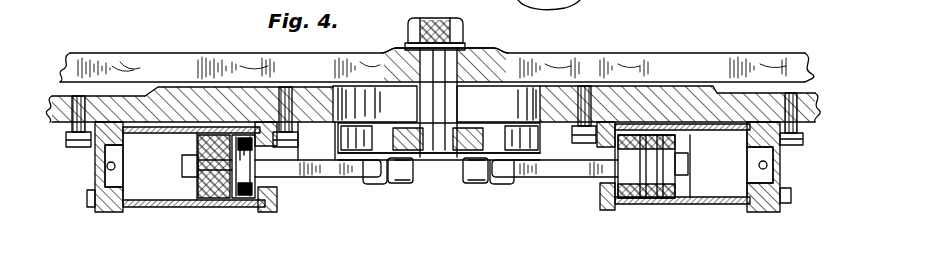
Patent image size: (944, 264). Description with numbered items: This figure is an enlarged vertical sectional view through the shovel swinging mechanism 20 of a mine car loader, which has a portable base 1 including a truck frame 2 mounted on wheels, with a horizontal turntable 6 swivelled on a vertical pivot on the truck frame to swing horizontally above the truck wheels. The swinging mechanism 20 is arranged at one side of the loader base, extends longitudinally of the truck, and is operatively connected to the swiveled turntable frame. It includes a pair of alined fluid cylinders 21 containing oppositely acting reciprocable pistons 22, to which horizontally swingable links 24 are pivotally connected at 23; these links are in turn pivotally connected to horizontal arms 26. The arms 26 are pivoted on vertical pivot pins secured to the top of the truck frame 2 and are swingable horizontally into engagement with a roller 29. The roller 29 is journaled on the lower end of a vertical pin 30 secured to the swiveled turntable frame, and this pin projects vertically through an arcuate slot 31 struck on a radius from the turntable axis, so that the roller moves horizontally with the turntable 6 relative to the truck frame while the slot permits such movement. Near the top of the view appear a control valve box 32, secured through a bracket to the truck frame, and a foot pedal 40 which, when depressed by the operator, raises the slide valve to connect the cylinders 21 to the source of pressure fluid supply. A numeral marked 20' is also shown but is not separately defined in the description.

The portable base 1 is at (105, 96).
The truck frame 2 is at (163, 88).
The horizontal turntable 6 is at (683, 67).
The shovel swinging mechanism 20 is at (419, 169).
The carrier arm 20' is at (533, 12).
The fluid cylinders 21 is at (183, 206).
The reciprocable pistons 22 is at (222, 205).
The pivotal connection 23 is at (254, 205).
The horizontally swingable links 24 is at (327, 171).
The horizontal arms 26 is at (464, 165).
The roller 29 is at (451, 129).
The vertical pin 30 is at (470, 64).
The arcuate slot 31 is at (386, 100).
The control valve box 32 is at (444, 25).
The foot pedal 40 is at (435, 21).